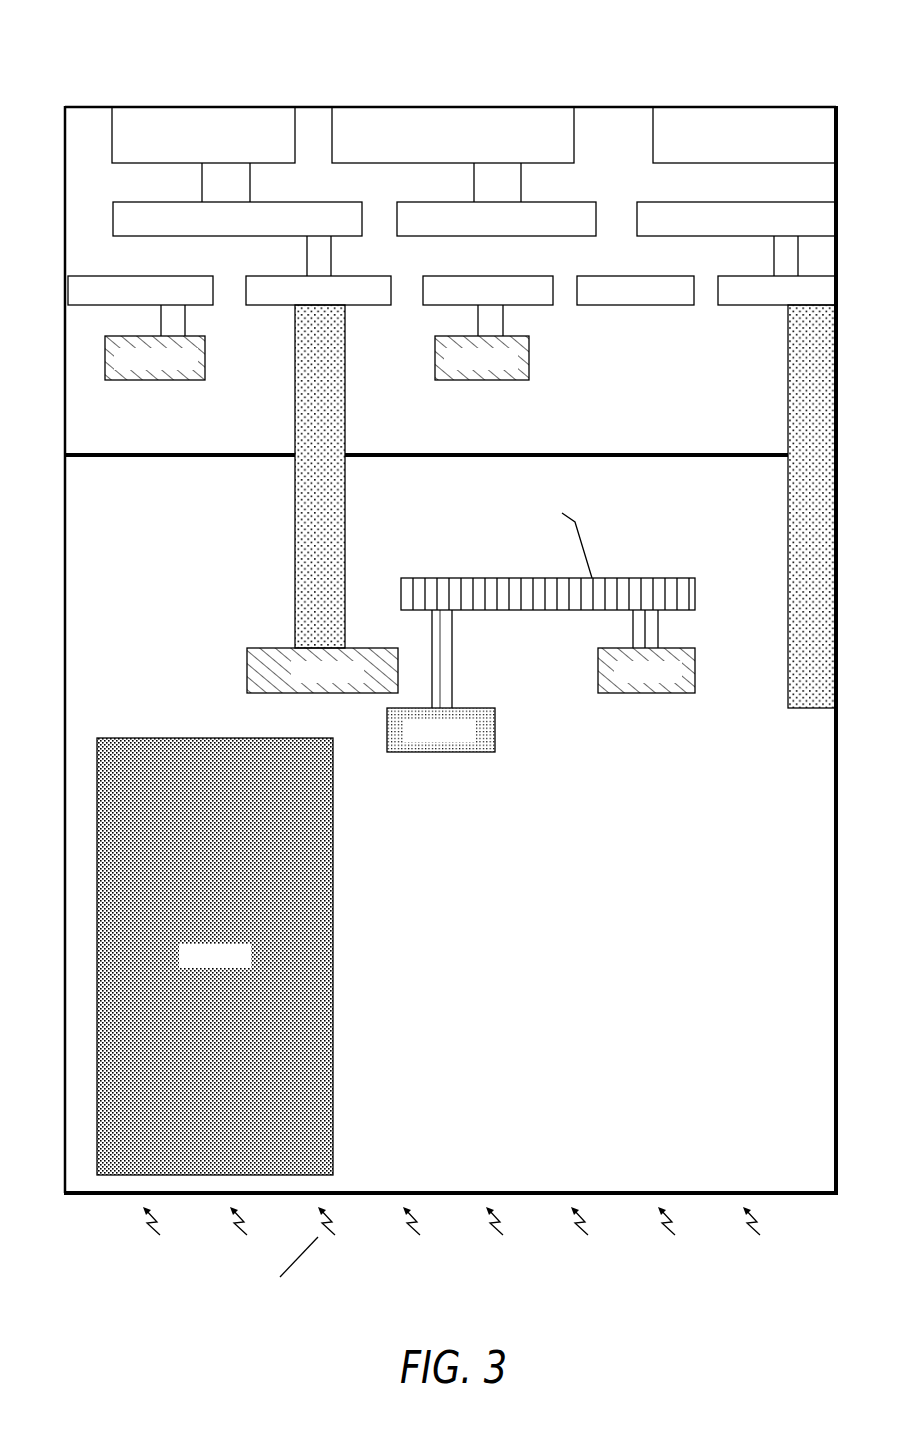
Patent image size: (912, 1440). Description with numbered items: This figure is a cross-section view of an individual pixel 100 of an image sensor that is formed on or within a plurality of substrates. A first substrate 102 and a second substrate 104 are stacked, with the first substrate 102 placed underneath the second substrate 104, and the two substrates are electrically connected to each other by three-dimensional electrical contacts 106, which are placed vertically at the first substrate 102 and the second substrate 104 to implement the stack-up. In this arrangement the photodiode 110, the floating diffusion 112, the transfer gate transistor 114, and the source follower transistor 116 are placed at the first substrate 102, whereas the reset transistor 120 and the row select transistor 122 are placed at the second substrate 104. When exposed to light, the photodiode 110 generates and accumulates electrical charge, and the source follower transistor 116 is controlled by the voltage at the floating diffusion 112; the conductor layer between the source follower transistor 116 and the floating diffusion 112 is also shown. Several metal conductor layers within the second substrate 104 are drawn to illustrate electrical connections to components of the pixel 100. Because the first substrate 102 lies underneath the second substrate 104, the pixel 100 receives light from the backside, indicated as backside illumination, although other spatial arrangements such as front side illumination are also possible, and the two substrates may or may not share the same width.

The pixel 100 is at (98, 67).
The first substrate 102 is at (828, 1185).
The second substrate 104 is at (768, 432).
The 3D electrical contacts 106 is at (787, 534).
The photodiode 110 is at (249, 967).
The floating diffusion 112 is at (474, 743).
The transfer gate transistor 114 is at (360, 684).
The source follower transistor 116 is at (682, 684).
The reset transistor 120 is at (155, 358).
The row select transistor 122 is at (514, 371).